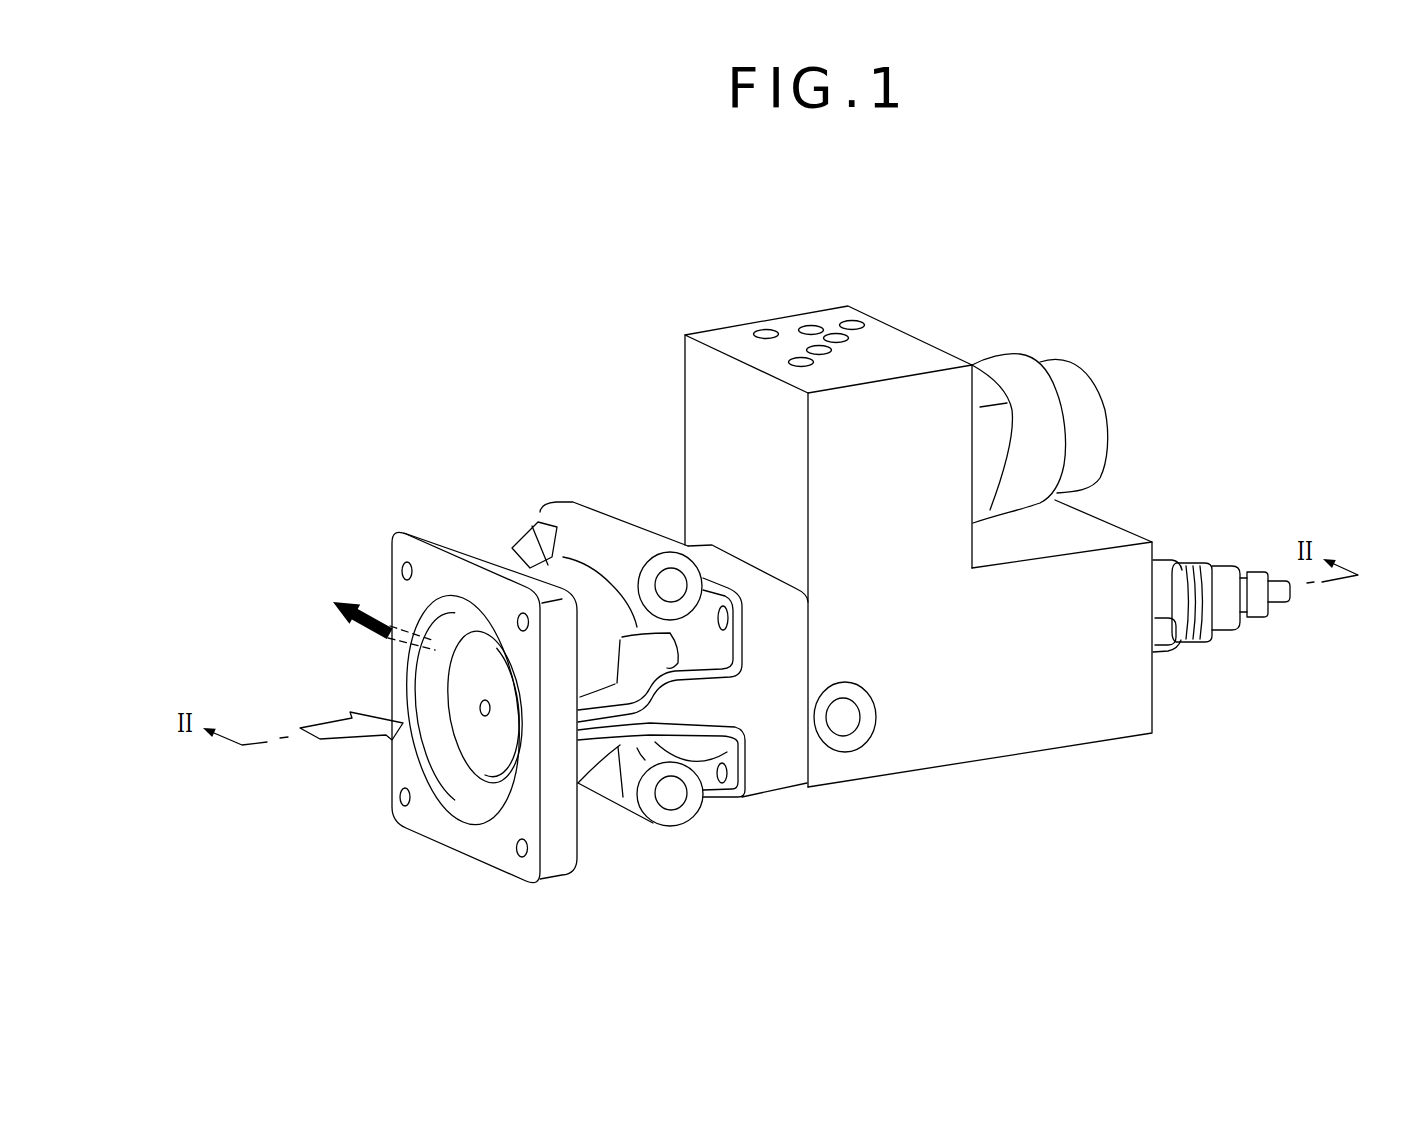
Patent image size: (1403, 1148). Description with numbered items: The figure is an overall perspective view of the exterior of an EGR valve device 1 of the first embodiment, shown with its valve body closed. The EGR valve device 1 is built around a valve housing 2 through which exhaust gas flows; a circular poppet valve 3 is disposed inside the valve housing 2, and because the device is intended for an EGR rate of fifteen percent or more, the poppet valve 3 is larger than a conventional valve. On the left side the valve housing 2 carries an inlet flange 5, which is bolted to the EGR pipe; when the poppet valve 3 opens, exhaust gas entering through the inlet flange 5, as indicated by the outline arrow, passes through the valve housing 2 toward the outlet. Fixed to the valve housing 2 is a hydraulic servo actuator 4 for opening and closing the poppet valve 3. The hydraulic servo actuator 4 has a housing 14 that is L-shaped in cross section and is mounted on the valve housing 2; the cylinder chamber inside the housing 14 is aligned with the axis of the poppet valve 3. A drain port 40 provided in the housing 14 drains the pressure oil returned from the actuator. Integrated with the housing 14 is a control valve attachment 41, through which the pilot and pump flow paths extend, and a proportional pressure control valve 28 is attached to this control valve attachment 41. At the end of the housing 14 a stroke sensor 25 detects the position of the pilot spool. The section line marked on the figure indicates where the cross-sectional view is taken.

The EGR valve device 1 is at (953, 230).
The valve housing 2 is at (773, 773).
The poppet valve 3 is at (467, 677).
The hydraulic servo actuator 4 is at (1162, 517).
The inlet flange 5 is at (555, 857).
The housing 14 is at (920, 752).
The stroke sensor 25 is at (1237, 651).
The proportional pressure control valve 28 is at (1057, 341).
The drain port 40 is at (847, 723).
The control valve attachment 41 is at (897, 435).